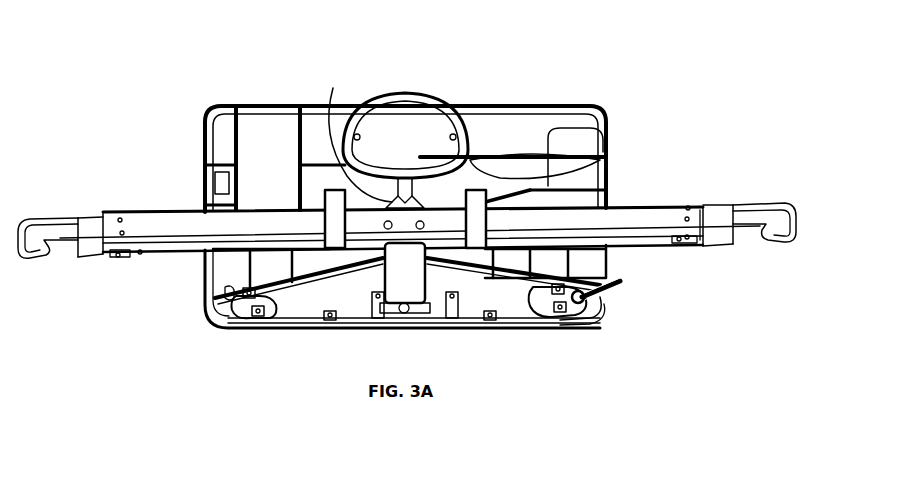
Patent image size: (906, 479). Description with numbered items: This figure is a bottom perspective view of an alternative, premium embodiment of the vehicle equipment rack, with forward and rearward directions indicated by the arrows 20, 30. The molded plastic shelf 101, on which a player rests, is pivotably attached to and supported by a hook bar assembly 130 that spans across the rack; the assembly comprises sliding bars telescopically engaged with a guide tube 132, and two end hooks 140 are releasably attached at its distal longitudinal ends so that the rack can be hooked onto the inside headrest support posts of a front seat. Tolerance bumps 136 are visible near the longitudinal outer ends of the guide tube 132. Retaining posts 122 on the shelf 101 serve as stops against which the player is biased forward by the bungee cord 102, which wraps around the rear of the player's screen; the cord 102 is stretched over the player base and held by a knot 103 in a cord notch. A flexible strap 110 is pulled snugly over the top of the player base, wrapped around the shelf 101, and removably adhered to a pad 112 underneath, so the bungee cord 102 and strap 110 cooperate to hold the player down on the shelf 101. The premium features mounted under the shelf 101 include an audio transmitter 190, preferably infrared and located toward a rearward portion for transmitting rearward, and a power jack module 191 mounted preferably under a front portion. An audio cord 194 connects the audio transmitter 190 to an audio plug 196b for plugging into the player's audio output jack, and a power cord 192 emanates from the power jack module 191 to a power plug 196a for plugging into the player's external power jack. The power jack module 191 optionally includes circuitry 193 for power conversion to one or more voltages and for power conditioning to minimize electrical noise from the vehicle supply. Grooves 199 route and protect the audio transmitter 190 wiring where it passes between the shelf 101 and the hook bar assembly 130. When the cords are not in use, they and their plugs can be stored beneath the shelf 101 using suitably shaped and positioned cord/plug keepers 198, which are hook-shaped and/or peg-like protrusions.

The forward direction arrow 20 is at (70, 342).
The rearward direction arrow 30 is at (85, 322).
The shelf 101 is at (535, 104).
The bungee cord 102 is at (620, 274).
The knot 103 is at (606, 298).
The strap 110 is at (580, 173).
The pad 112 is at (597, 124).
The retaining posts 122 is at (330, 326).
The hook bar assembly 130 is at (622, 196).
The guide tube 132 is at (677, 205).
The tolerance bumps 136 is at (120, 219).
The end hooks 140 is at (20, 206).
The audio transmitter 190 is at (403, 117).
The power jack module 191 is at (410, 325).
The power cord 192 is at (206, 322).
The power conversion and/or power conditioning circuitry 193 is at (390, 276).
The audio cord 194 is at (602, 298).
The power plug 196a is at (367, 330).
The audio plug 196b is at (443, 325).
The cord/plug keepers 198 is at (222, 328).
The grooves 199 is at (337, 112).